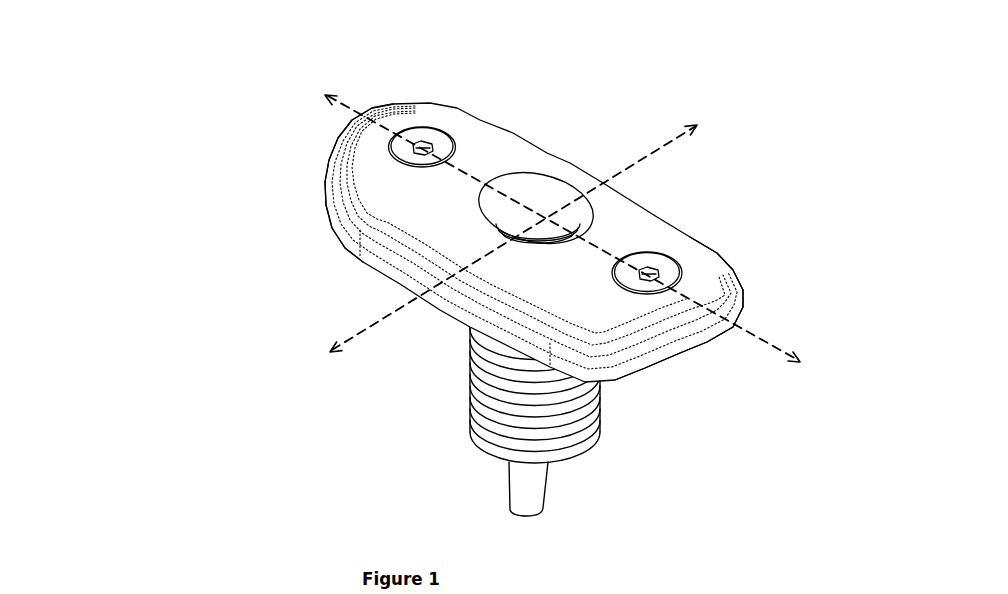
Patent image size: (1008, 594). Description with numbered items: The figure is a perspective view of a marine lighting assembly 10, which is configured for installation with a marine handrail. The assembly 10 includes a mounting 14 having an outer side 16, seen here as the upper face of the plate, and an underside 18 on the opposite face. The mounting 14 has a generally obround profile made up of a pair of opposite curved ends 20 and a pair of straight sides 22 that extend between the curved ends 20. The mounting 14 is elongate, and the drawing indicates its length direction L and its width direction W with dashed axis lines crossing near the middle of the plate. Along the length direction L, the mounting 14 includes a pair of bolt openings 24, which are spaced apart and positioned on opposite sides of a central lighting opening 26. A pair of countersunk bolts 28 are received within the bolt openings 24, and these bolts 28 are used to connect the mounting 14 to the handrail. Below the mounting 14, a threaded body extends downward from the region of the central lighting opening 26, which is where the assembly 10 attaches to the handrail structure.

The marine lighting assembly 10 is at (205, 122).
The mounting 14 is at (676, 202).
The outer side 16 is at (510, 136).
The underside 18 is at (379, 291).
The curved ends 20 is at (332, 132).
The straight sides 22 is at (570, 165).
The bolt openings 24 is at (430, 125).
The central lighting opening 26 is at (478, 205).
The countersunk bolts 28 is at (420, 140).
The length direction L is at (773, 343).
The width direction W is at (662, 147).